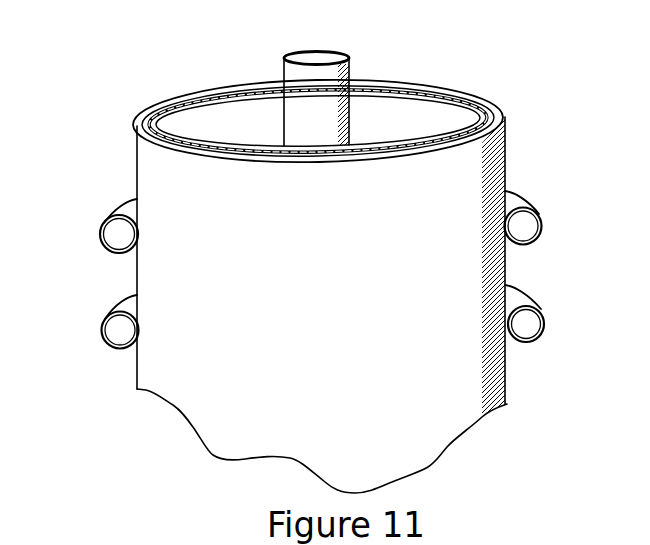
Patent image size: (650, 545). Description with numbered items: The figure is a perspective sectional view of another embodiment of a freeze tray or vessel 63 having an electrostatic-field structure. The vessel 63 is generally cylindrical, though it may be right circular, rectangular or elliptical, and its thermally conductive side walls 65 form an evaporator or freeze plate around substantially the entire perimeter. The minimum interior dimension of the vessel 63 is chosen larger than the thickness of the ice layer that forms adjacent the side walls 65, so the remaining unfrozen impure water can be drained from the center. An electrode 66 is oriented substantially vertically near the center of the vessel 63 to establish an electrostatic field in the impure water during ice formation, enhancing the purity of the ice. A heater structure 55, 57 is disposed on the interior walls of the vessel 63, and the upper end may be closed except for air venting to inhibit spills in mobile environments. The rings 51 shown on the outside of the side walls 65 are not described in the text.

The ring 51 is at (101, 325).
The heater structure 55 is at (150, 107).
The heater structure 57 is at (503, 109).
The vessel 63 is at (507, 404).
The side walls 65 is at (155, 182).
The electrode 66 is at (298, 79).